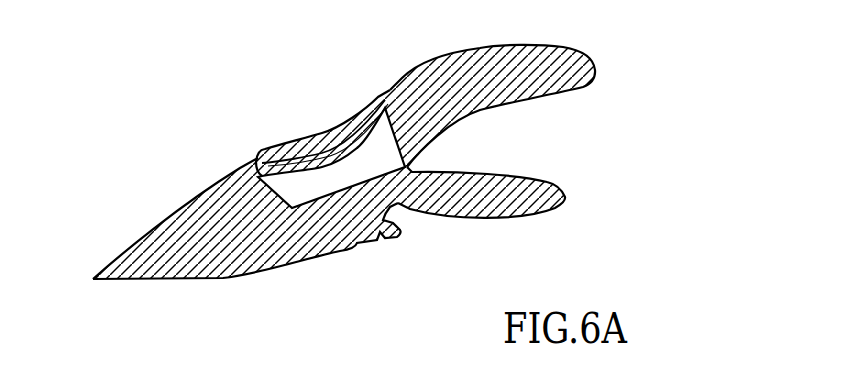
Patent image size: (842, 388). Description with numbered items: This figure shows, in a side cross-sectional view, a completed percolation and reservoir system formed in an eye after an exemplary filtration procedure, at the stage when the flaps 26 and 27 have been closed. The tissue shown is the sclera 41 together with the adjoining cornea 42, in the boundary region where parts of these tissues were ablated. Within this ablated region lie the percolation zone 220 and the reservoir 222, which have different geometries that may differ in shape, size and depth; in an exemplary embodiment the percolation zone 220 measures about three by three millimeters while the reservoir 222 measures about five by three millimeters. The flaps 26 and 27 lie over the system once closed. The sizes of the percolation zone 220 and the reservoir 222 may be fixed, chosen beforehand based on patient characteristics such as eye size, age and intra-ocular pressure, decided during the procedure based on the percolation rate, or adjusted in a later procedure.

The flap 26 is at (402, 97).
The flap 27 is at (288, 143).
The sclera 41 is at (212, 278).
The cornea 42 is at (533, 100).
The percolation zone 220 is at (390, 143).
The reservoir 222 is at (297, 187).